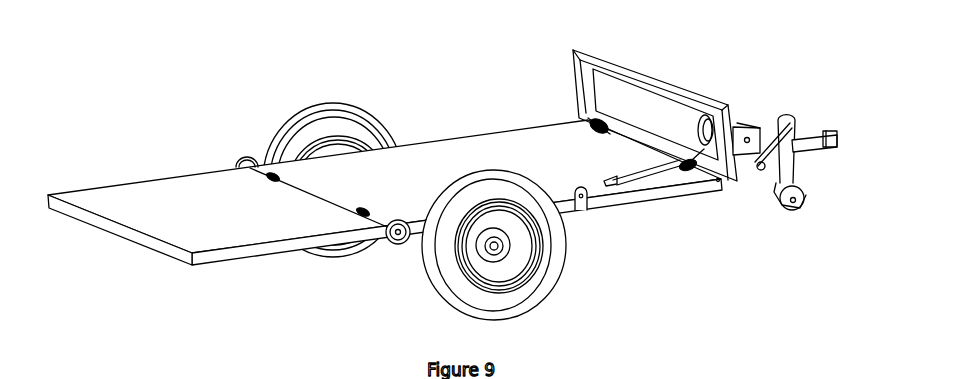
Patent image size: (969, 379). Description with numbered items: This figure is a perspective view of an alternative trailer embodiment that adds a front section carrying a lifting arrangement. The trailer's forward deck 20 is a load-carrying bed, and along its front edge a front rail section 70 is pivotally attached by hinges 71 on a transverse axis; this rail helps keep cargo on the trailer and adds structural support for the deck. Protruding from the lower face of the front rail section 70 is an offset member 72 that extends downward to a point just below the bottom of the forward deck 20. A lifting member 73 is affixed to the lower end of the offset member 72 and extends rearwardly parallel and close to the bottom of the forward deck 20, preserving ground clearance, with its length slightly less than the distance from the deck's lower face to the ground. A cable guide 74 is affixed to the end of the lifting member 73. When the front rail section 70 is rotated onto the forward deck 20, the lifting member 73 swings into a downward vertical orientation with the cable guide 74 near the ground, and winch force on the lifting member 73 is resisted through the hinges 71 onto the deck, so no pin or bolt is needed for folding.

The forward deck 20 is at (453, 153).
The front rail section 70 is at (627, 66).
The hinges 71 is at (590, 124).
The offset member 72 is at (675, 168).
The lifting member 73 is at (640, 180).
The cable guide 74 is at (611, 181).